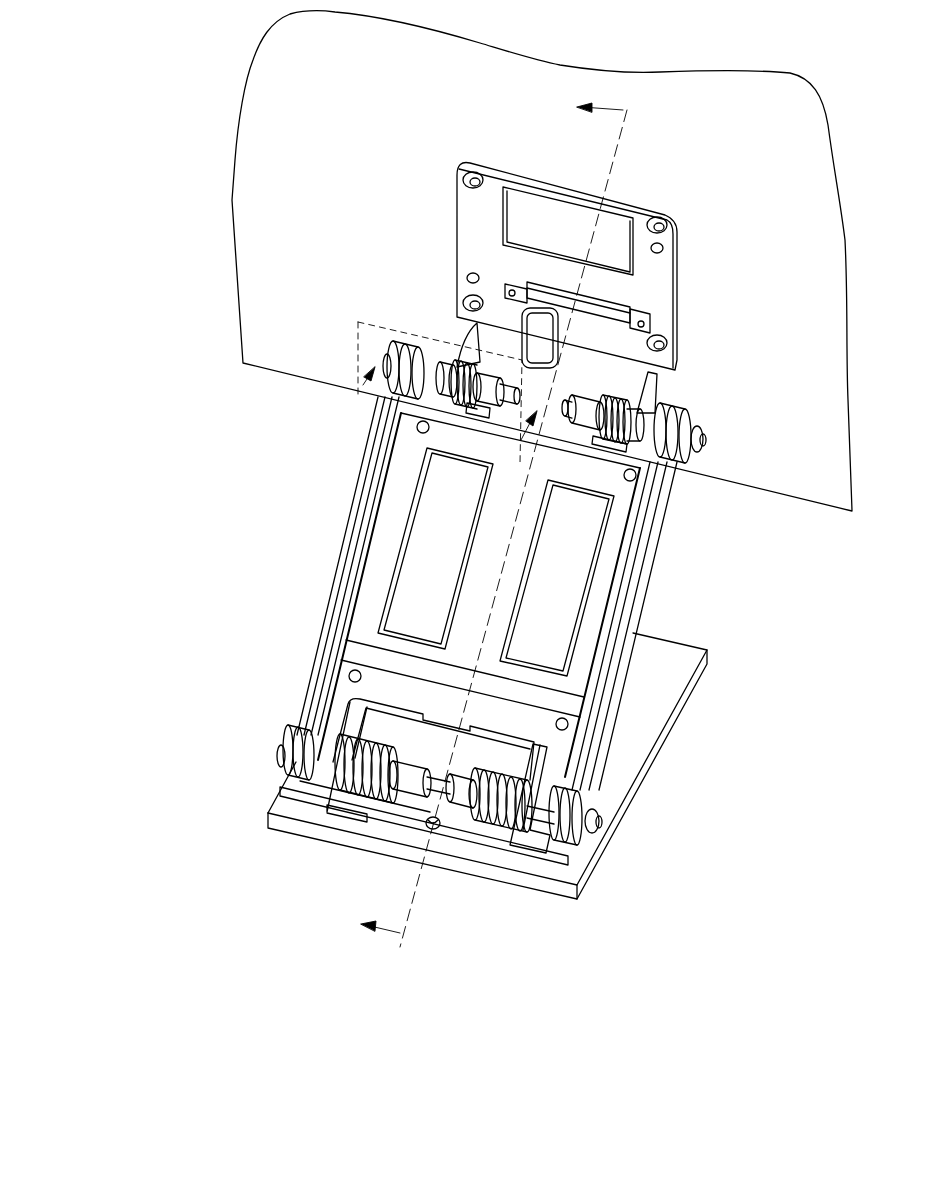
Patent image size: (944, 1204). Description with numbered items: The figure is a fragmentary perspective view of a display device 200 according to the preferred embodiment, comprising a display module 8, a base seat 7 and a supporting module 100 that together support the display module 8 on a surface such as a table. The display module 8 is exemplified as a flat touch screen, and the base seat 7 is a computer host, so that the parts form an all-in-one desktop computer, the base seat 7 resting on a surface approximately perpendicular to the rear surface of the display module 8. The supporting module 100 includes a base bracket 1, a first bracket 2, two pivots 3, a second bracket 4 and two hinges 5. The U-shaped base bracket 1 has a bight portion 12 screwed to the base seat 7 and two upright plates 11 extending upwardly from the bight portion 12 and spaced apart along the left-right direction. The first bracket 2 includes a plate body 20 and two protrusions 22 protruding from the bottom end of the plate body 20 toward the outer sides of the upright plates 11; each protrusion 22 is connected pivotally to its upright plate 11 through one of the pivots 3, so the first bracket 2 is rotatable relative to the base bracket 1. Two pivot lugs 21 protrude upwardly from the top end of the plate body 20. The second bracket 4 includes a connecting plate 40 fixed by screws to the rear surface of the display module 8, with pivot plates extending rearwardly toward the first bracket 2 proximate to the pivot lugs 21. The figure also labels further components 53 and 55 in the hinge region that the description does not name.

The display device 200 is at (148, 345).
The supporting module 100 is at (290, 683).
The display module 8 is at (804, 478).
The base seat 7 is at (653, 755).
The second bracket 4 is at (456, 247).
The connecting plate 40 is at (473, 213).
The hinges 5 is at (563, 405).
The plate body 20 is at (603, 565).
The slot of supporting panel 55 is at (487, 420).
The first bracket 2 is at (633, 525).
The pivot lugs 21 is at (417, 392).
The upper torsion spring unit 53 is at (430, 430).
The protrusions 22 is at (333, 727).
The pivots 3 is at (367, 787).
The base bracket 1 is at (443, 840).
The upright plates 11 is at (338, 793).
The bight portion 12 is at (392, 828).